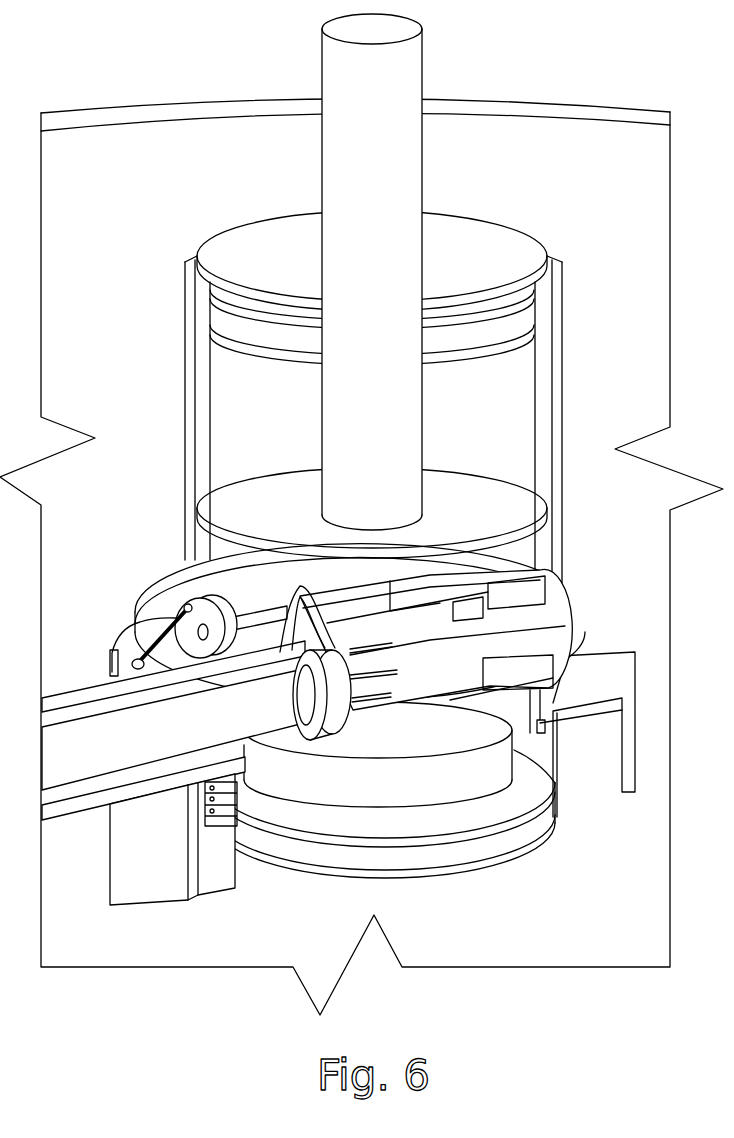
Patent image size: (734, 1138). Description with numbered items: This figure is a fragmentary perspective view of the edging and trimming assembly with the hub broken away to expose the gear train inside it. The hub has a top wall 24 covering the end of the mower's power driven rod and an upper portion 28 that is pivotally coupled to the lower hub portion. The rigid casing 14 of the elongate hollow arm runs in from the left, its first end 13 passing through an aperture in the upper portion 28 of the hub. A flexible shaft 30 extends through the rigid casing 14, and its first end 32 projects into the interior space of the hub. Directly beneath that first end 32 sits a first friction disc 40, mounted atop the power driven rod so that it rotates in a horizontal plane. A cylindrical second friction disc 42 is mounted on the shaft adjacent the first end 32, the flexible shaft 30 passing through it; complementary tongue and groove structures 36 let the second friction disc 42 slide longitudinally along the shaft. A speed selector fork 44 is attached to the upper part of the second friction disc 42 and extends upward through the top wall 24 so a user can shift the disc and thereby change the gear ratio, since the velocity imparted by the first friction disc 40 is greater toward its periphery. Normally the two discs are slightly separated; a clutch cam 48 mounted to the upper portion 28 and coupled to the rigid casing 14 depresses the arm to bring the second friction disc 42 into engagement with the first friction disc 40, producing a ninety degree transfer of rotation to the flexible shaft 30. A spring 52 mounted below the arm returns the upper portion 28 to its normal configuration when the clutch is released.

The first end 13 is at (562, 588).
The rigid casing 14 is at (82, 690).
The top wall 24 is at (383, 569).
The second/upper portion 28 is at (158, 582).
The flexible shaft 30 is at (128, 752).
The first end 32 is at (572, 630).
The tongue and groove structures 36 is at (388, 658).
The first friction disc 40 is at (456, 744).
The second friction disc 42 is at (323, 732).
The speed selector fork 44 is at (297, 588).
The clutch cam 48 is at (202, 598).
The spring 52 is at (222, 822).